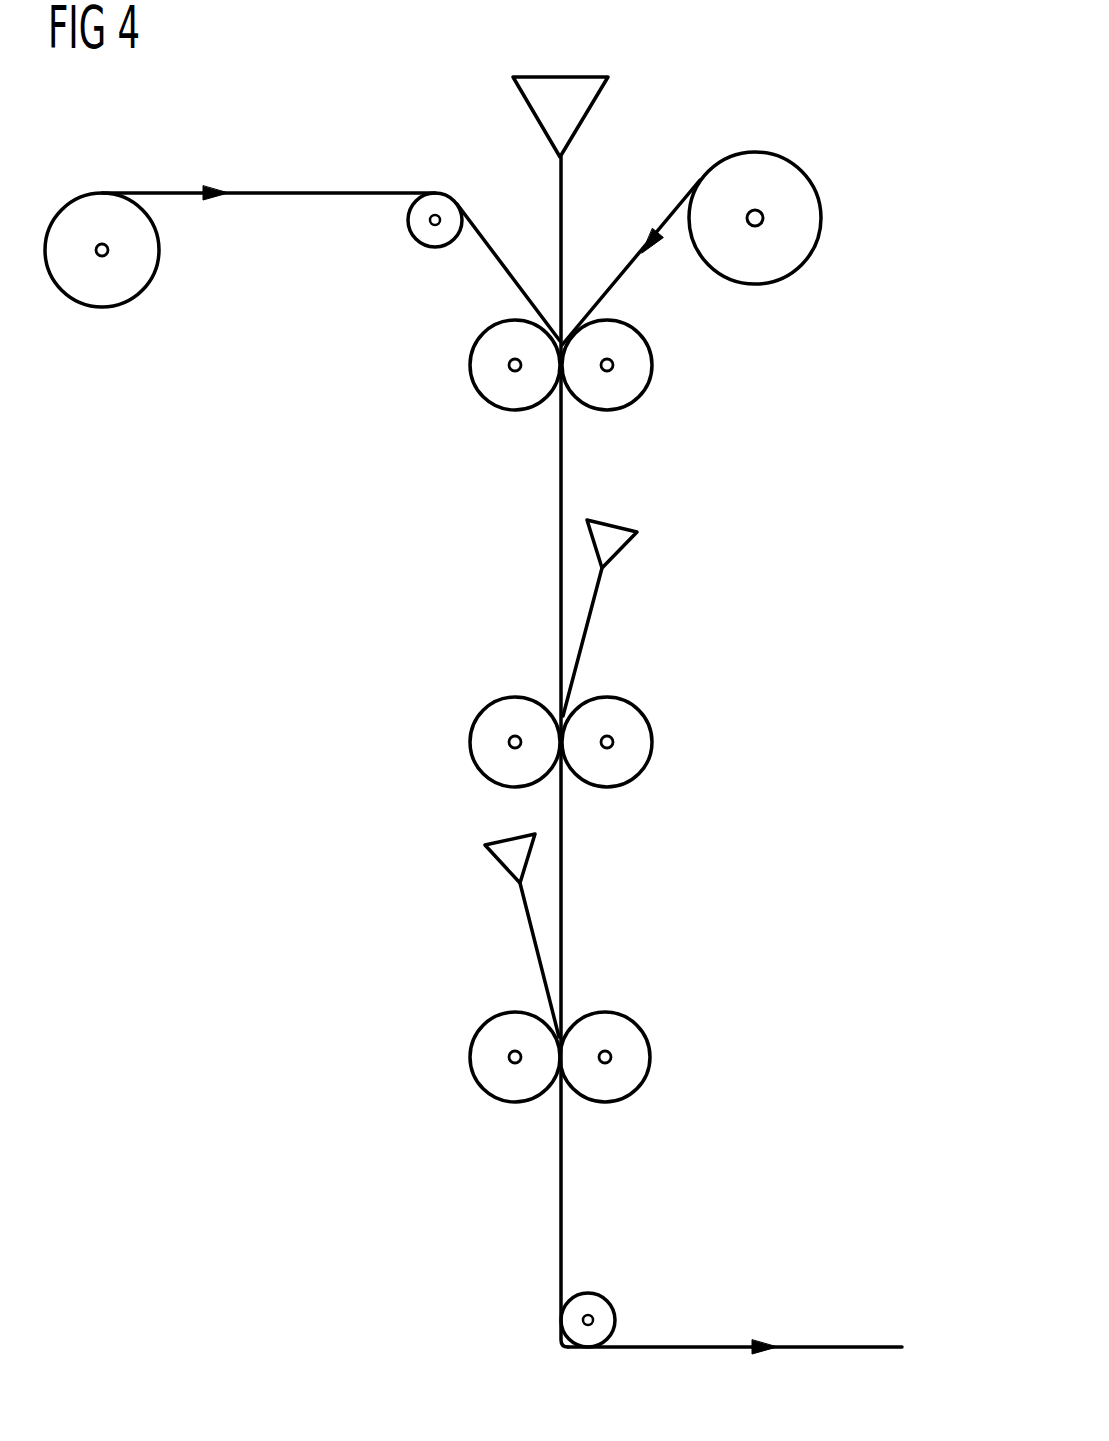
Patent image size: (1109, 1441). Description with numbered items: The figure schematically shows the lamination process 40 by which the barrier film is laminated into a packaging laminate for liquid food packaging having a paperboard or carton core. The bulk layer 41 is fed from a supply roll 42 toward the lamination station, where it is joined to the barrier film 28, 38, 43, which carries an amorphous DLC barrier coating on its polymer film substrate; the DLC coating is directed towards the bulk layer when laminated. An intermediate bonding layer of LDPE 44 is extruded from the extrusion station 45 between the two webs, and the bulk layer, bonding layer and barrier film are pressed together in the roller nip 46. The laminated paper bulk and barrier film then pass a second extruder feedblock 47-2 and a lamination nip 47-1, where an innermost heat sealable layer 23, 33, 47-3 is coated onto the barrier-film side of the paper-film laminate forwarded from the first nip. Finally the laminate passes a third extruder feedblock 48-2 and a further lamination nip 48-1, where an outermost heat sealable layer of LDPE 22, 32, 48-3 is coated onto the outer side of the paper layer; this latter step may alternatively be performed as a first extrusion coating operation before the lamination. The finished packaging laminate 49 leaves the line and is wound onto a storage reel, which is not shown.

The lamination process 40 is at (473, 715).
The bulk layer 41 is at (284, 190).
The carrier film supply roll 42 is at (160, 252).
The intermediate bonding layer of LDPE 44 is at (753, 152).
The extrusion station 45 is at (533, 113).
The barrier film 28 is at (680, 262).
The barrier film 38 is at (680, 262).
The barrier film 43 is at (628, 270).
The roller nip 46 is at (652, 382).
The lamination nip 47-1 is at (655, 740).
The second extruder feedblock 47-2 is at (618, 553).
The innermost heat sealable layer 23 is at (659, 642).
The innermost heat sealable layer 33 is at (659, 642).
The innermost heat sealable layer 47-3 is at (587, 640).
The lamination nip 48-1 is at (652, 1055).
The third extruder feedblock 48-2 is at (507, 870).
The outermost heat sealable layer of LDPE 22 is at (437, 960).
The outermost heat sealable layer of LDPE 32 is at (437, 960).
The outermost heat sealable layer of LDPE 48-3 is at (537, 955).
The finished packaging laminate 49 is at (683, 1345).